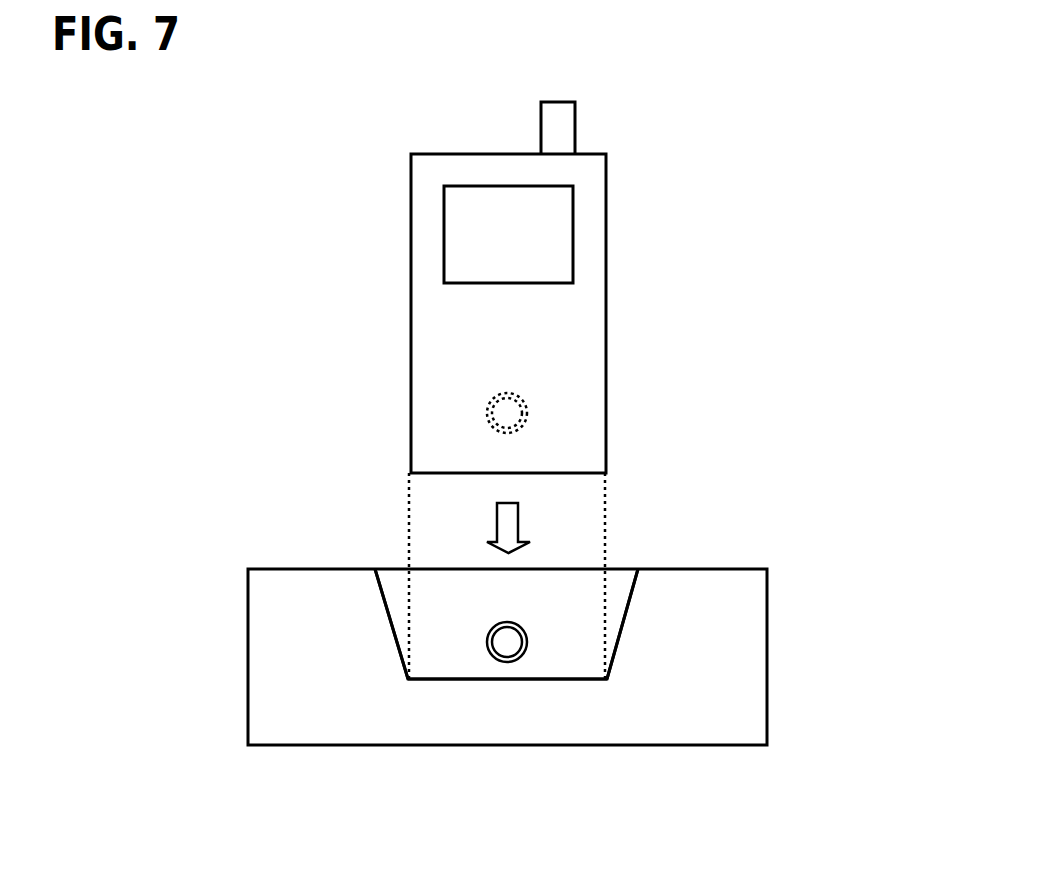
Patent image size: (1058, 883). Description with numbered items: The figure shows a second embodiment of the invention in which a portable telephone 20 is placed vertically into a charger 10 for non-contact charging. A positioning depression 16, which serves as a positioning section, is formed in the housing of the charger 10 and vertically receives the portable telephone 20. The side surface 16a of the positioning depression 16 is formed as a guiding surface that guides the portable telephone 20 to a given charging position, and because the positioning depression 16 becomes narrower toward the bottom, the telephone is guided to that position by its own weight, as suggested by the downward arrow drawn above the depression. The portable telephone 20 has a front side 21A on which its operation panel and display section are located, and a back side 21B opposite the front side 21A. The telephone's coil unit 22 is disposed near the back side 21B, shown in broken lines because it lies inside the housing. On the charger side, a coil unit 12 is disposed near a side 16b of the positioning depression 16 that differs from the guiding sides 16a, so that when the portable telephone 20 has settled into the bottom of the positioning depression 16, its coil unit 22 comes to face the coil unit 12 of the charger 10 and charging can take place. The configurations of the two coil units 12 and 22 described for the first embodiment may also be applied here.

The portable telephone 20 is at (607, 273).
The front side 21A is at (438, 298).
The back side 21B is at (553, 353).
The coil unit 22 is at (500, 412).
The charger 10 is at (767, 618).
The positioning depression 16 is at (469, 617).
The side surface 16a is at (617, 637).
The side 16b is at (397, 578).
The coil unit 12 is at (510, 638).